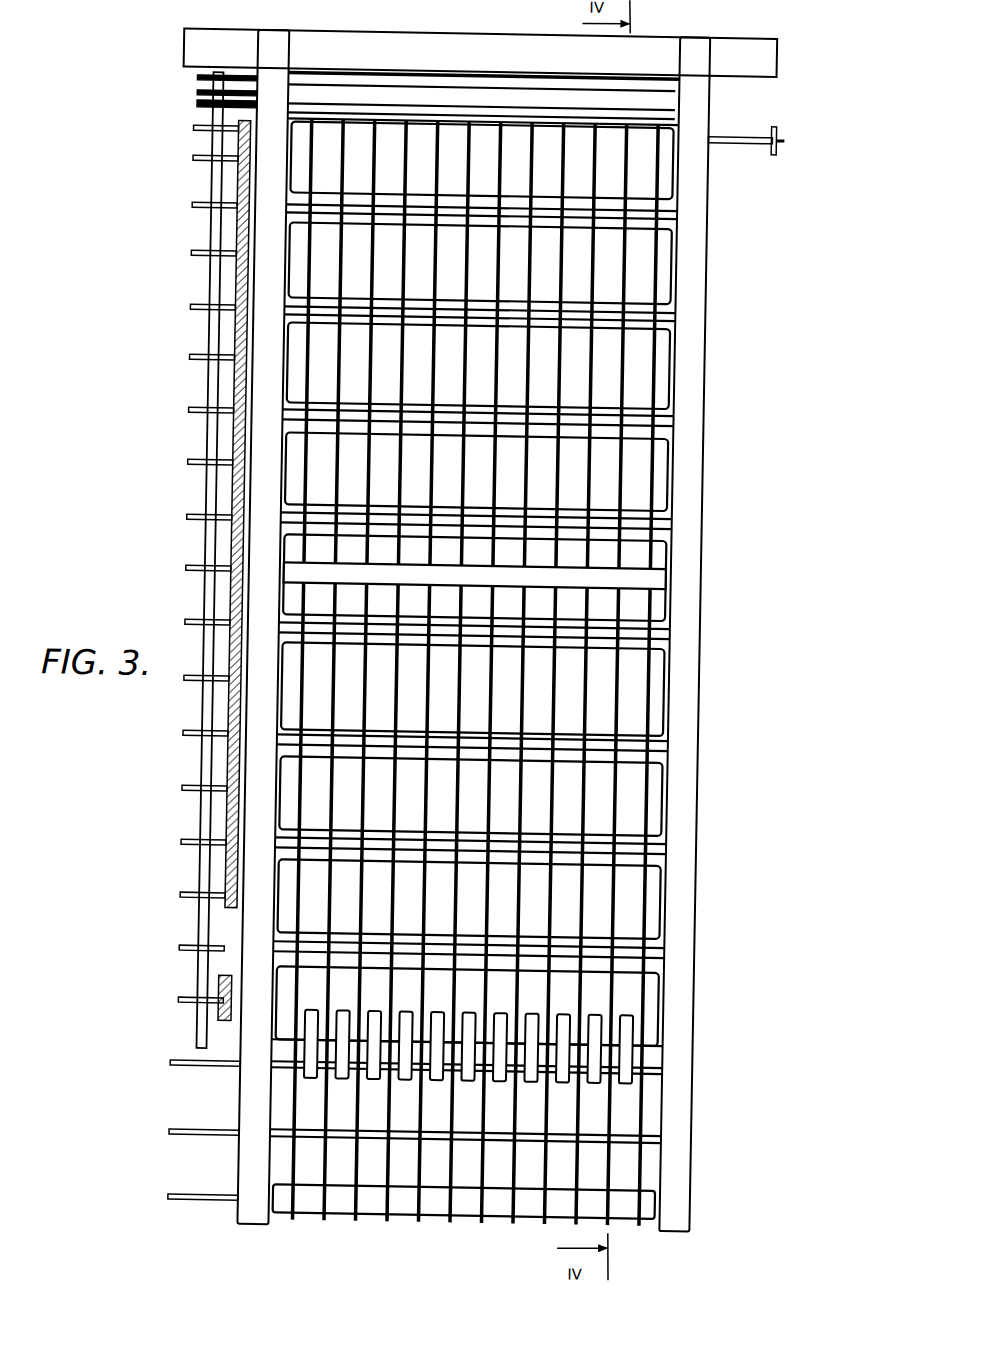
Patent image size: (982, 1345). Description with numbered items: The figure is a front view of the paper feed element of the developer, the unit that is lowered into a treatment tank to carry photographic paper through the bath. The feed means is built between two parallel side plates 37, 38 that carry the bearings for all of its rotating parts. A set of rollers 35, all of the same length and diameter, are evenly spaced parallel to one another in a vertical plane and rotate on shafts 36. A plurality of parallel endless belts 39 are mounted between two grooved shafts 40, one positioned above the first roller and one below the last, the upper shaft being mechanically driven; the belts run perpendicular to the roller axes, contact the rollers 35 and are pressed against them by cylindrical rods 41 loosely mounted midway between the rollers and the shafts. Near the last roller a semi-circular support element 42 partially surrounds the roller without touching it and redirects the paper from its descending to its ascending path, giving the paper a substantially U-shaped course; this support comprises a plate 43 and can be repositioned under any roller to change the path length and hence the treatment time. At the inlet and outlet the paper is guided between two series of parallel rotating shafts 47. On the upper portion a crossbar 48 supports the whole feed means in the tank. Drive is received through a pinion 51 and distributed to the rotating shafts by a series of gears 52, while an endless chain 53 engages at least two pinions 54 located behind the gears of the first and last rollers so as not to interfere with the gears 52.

The rollers 35 is at (657, 884).
The shafts 36 is at (186, 468).
The side plate 37 is at (682, 1172).
The side plate 38 is at (253, 1084).
The endless belts 39 is at (590, 461).
The shafts 40 is at (349, 137).
The cylindrical rods 41 is at (670, 417).
The semi-circular support element 42 is at (448, 1094).
The plate 43 is at (576, 1049).
The rotating shafts 47 is at (348, 96).
The crossbar 48 is at (320, 46).
The pinion 51 is at (764, 150).
The gears 52 is at (205, 335).
The endless chain 53 is at (214, 560).
The pinions 54 is at (228, 993).